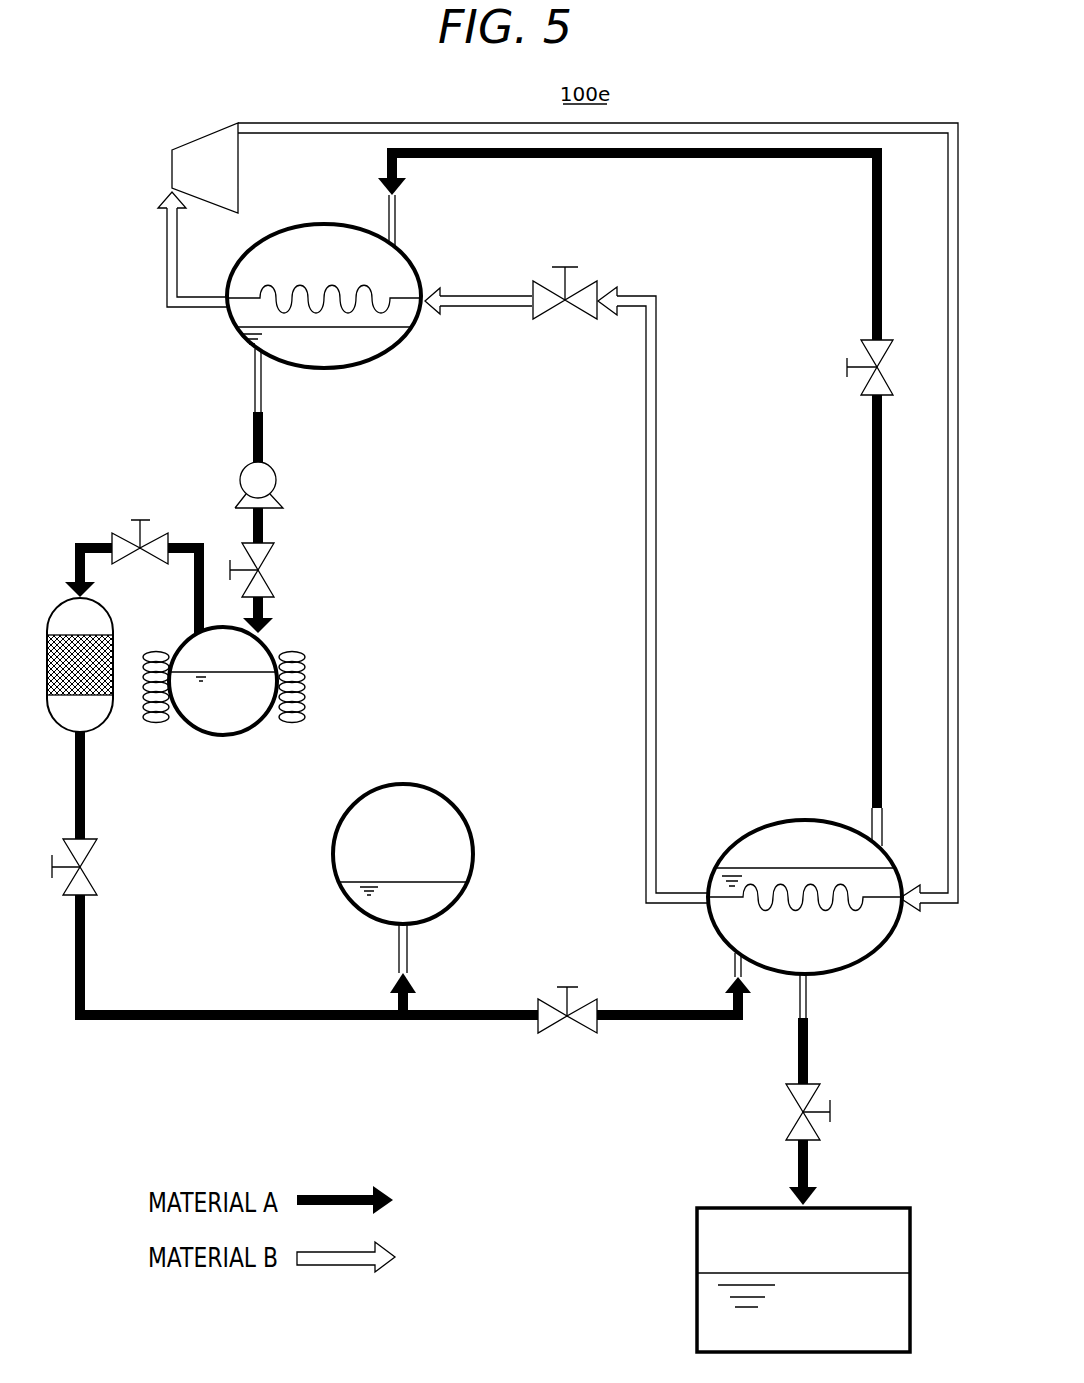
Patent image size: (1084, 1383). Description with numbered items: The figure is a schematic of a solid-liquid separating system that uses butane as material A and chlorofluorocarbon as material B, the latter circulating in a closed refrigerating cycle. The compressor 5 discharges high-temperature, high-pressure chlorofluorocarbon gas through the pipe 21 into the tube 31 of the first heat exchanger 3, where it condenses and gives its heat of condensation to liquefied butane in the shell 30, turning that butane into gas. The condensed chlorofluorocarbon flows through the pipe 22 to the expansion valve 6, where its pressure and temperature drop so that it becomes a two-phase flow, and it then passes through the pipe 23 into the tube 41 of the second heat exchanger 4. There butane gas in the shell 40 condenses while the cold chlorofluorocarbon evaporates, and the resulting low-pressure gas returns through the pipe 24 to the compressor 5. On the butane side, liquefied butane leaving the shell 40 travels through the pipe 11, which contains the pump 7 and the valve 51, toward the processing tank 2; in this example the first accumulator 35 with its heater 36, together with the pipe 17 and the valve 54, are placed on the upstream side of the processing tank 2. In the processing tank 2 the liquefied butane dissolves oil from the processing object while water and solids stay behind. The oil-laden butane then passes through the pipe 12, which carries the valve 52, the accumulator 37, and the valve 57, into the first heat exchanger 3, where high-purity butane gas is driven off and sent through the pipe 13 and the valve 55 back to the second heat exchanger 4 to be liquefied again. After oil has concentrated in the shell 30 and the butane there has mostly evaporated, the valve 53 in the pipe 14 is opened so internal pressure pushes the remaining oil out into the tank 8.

The processing tank 2 is at (96, 732).
The first heat exchanger 3 is at (816, 893).
The second heat exchanger 4 is at (331, 327).
The compressor 5 is at (203, 140).
The expansion valve 6 is at (566, 282).
The pump 7 is at (282, 482).
The tank 8 is at (697, 1312).
The pipe 11 is at (264, 412).
The pipe 12 is at (468, 1010).
The pipe 13 is at (757, 160).
The pipe 14 is at (808, 1032).
The pipe 17 is at (192, 542).
The pipe 21 is at (832, 124).
The pipe 22 is at (662, 902).
The pipe 23 is at (505, 312).
The pipe 24 is at (163, 291).
The shell 30 is at (750, 838).
The tube 31 is at (868, 895).
The first accumulator 35 is at (223, 738).
The heater 36 is at (310, 691).
The accumulator 37 is at (468, 818).
The shell 40 is at (252, 264).
The tube 41 is at (400, 290).
The valve 51 is at (276, 583).
The valve 52 is at (97, 871).
The valve 53 is at (819, 1129).
The valve 54 is at (122, 534).
The valve 55 is at (866, 342).
The valve 57 is at (582, 1000).